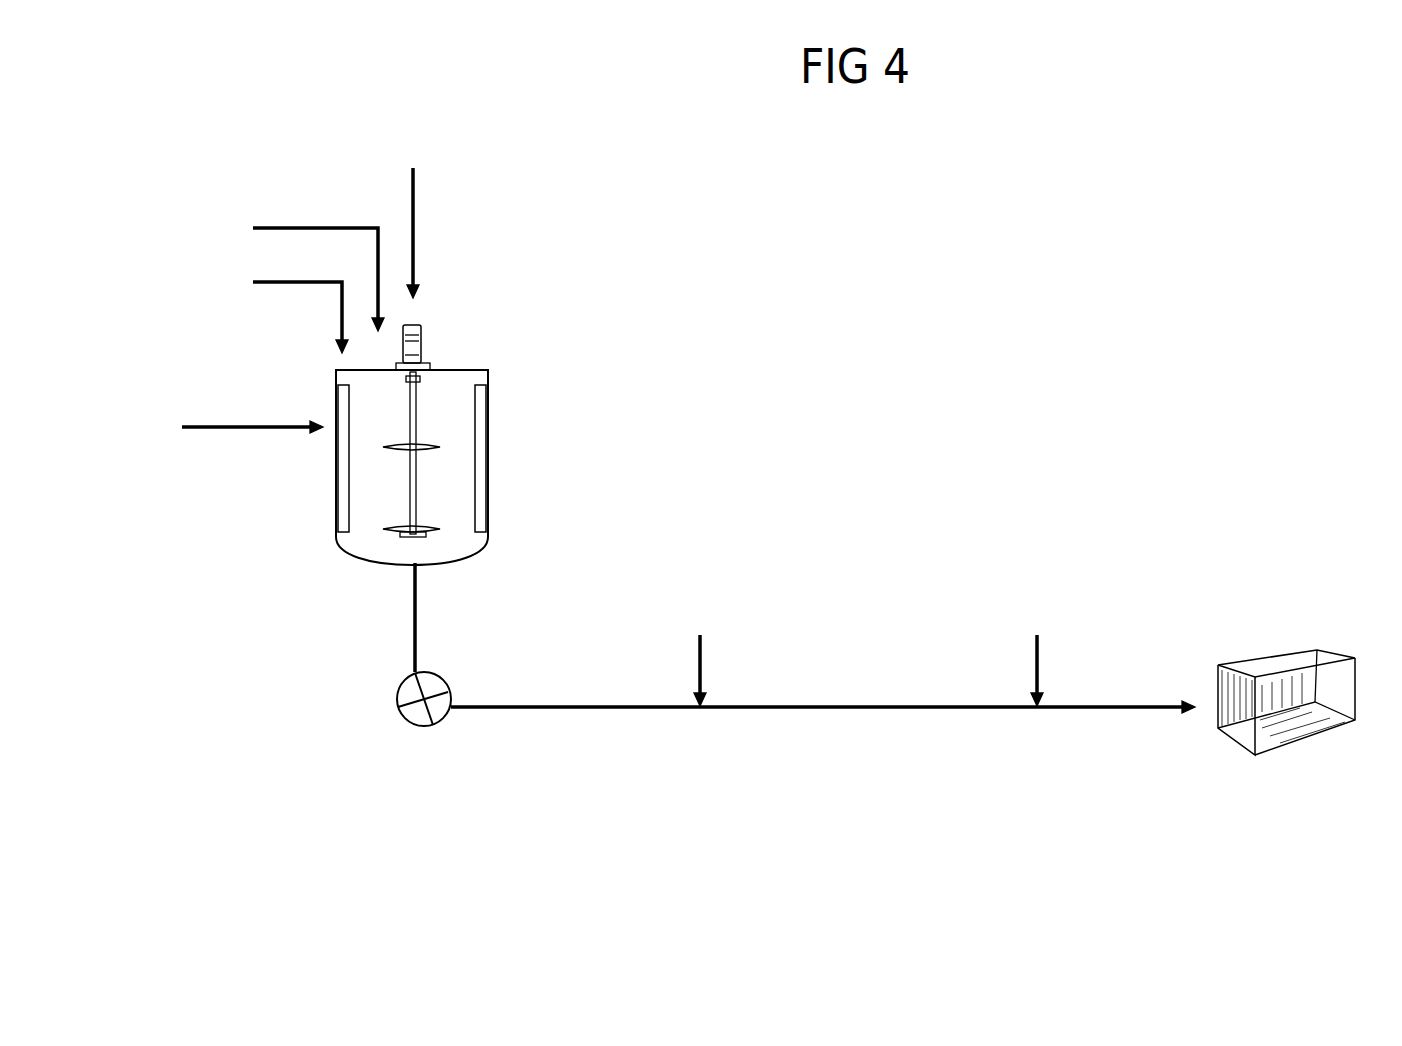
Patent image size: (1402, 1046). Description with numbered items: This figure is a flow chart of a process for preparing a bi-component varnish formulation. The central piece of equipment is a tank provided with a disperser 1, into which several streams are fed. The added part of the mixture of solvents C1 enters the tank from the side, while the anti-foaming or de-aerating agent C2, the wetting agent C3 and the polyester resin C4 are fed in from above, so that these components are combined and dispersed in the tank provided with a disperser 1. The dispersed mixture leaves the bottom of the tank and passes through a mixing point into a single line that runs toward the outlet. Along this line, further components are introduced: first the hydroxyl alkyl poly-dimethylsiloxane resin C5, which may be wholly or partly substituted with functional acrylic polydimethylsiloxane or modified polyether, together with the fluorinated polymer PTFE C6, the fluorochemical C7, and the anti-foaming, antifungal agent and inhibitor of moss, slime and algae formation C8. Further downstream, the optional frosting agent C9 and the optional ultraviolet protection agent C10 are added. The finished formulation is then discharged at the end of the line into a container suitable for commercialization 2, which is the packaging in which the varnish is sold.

The tank provided with a disperser 1 is at (443, 445).
The container suitable for commercialization 2 is at (1307, 702).
The added part of the mixture of solvents C1 is at (252, 413).
The anti-foaming or de-aerating agent C2 is at (300, 301).
The wetting agent C3 is at (318, 262).
The polyester resin C4 is at (411, 219).
The hydroxyl alkyl poly-dimethylsiloxane resin C5 is at (659, 654).
The fluorinated polymer PTFE C6 is at (671, 615).
The fluorochemical C7 is at (712, 615).
The anti-foaming, antifungal agent and inhibitor of moss, slime and algae formation C8 is at (750, 615).
The frosting agent C9 is at (1025, 654).
The ultraviolet protection agent C10 is at (1087, 615).